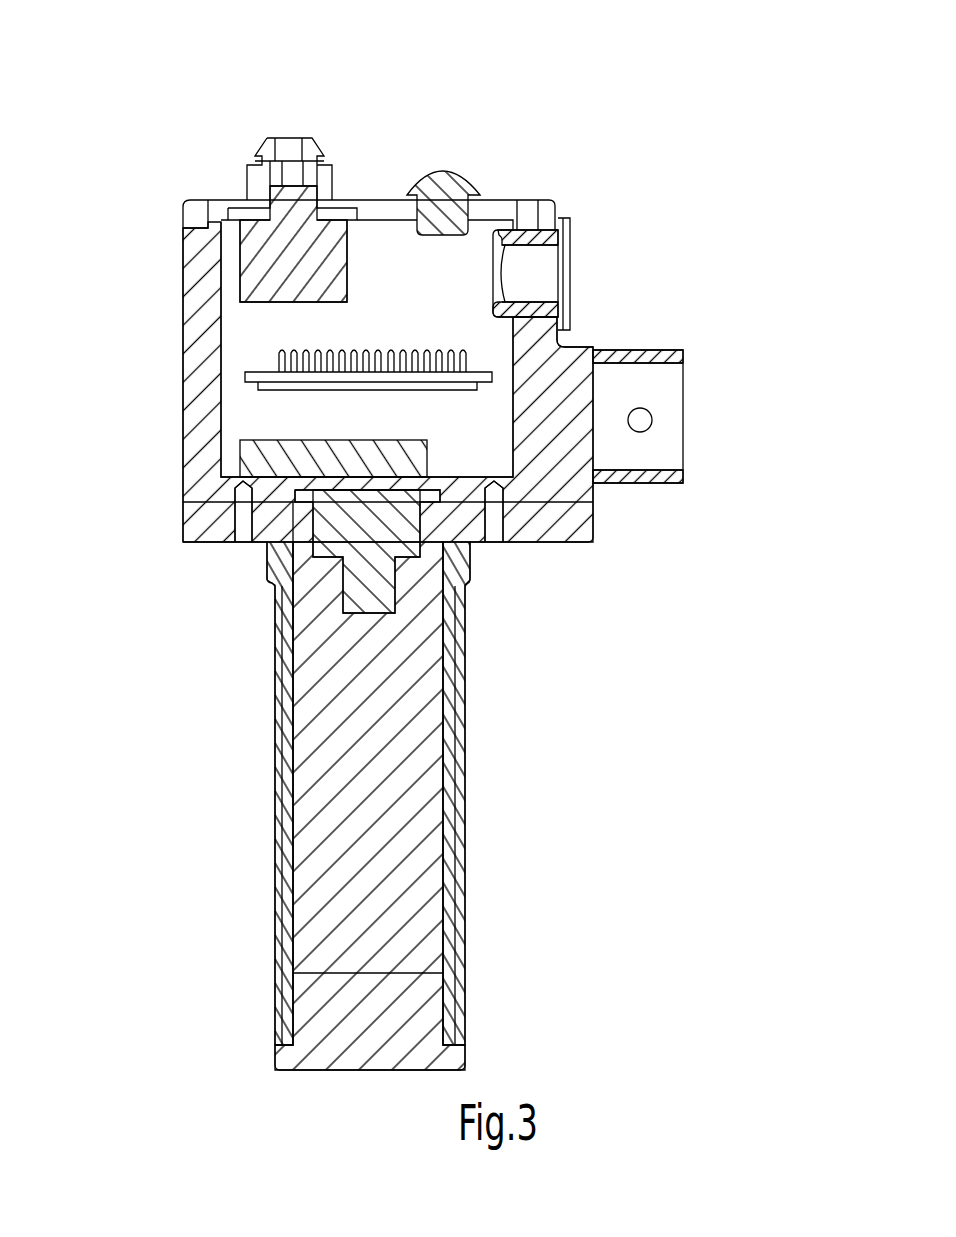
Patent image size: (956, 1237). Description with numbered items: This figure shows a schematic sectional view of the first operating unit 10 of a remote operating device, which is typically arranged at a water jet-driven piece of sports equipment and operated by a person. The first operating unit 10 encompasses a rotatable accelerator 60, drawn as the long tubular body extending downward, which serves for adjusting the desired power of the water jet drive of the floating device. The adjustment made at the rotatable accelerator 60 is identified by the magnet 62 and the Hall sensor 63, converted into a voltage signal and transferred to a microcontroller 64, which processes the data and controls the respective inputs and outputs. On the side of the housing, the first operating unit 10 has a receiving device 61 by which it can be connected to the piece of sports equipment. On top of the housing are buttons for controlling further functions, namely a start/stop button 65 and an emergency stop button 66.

The first operating unit 10 is at (597, 183).
The rotatable accelerator 60 is at (463, 823).
The receiving device 61 is at (655, 384).
The magnet 62 is at (337, 518).
The Hall sensor 63 is at (278, 467).
The microcontroller 64 is at (268, 382).
The start/stop button 65 is at (443, 170).
The emergency stop button 66 is at (287, 143).